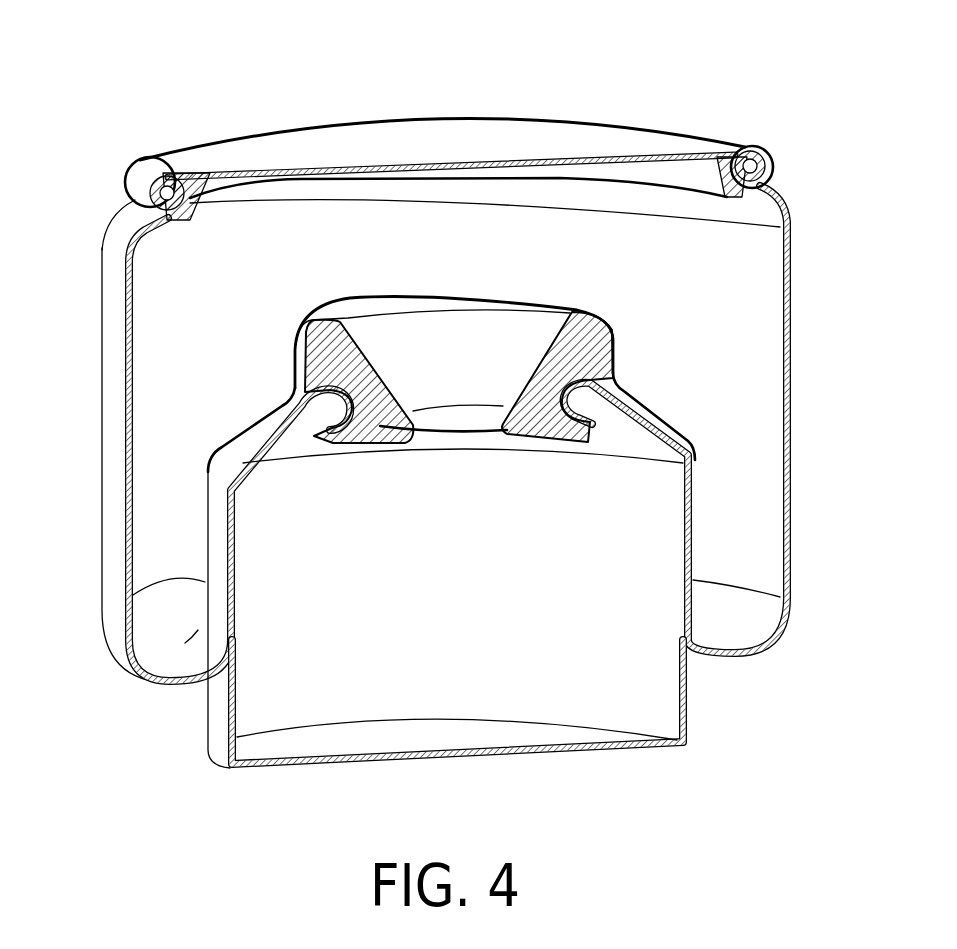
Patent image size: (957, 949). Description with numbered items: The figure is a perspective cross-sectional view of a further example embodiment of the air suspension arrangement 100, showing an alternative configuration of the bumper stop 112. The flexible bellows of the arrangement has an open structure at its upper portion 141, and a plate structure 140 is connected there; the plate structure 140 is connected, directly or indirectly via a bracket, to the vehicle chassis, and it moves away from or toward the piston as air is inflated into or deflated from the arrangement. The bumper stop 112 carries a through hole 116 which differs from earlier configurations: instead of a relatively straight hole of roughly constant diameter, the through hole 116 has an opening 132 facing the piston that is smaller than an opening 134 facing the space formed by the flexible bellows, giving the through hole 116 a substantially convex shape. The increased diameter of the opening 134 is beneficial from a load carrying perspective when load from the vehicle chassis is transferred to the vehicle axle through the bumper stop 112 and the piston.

The air suspension arrangement 100 is at (776, 89).
The plate structure 140 is at (186, 162).
The upper portion 141 is at (141, 178).
The opening 134 is at (367, 310).
The bumper stop 112 is at (580, 330).
The through hole 116 is at (488, 356).
The opening 132 is at (460, 420).